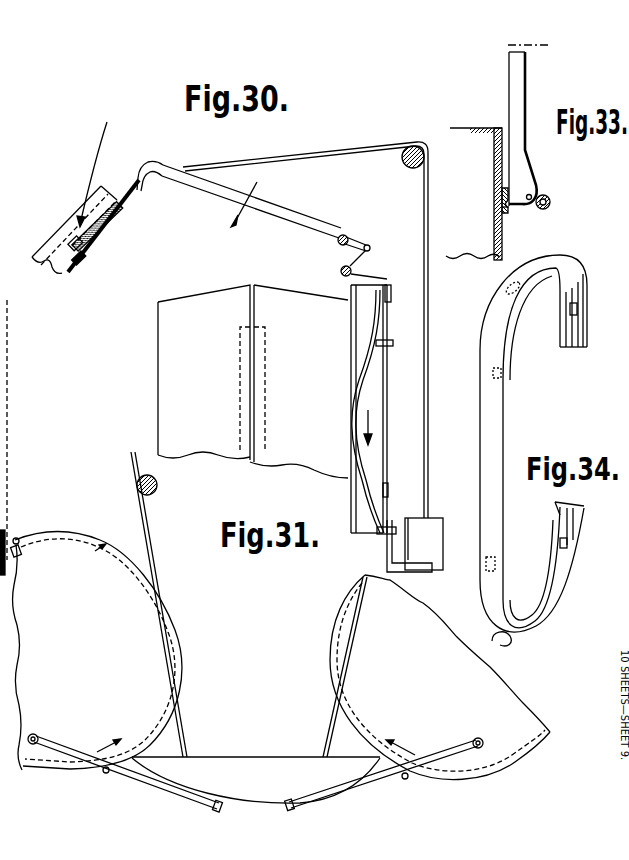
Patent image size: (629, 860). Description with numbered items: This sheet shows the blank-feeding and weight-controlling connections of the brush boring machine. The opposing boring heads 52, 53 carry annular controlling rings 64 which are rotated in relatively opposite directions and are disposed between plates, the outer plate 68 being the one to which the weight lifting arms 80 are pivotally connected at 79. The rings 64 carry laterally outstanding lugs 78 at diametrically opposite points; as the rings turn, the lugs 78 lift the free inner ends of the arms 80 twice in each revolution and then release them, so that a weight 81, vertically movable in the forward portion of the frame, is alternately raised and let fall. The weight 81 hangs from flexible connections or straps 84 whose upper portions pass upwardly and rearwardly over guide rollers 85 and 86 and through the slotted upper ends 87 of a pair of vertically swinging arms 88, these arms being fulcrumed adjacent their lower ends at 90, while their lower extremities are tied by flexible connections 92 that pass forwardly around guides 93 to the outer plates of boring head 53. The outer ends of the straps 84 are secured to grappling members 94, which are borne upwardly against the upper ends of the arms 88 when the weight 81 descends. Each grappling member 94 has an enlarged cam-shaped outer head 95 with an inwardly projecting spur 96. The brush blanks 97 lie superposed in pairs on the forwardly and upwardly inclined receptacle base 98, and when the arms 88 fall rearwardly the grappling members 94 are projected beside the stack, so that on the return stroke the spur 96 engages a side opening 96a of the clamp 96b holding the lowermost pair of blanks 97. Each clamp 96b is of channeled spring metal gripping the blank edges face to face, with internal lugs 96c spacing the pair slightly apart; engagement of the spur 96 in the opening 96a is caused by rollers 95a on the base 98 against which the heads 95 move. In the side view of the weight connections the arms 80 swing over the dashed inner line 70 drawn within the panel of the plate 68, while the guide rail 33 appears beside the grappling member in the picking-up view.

In FIG. 30, the guide rail 33 is at (120, 197).
In FIG. 30, the boring head 52 is at (204, 360).
In FIG. 30, the boring head 53 is at (299, 369).
In FIG. 30, the annular controlling ring 64 is at (372, 411).
In FIG. 30, the outer plate 68 is at (387, 390).
In FIG. 31, the outer plate 68 is at (131, 551).
In FIG. 31, the panel fold line 70 is at (333, 640).
In FIG. 30, the lug 78 is at (391, 342).
In FIG. 31, the lug 78 is at (21, 545).
In FIG. 31, the pivot 79 is at (42, 732).
In FIG. 30, the weight lifting arm 80 is at (387, 550).
In FIG. 31, the weight lifting arm 80 is at (256, 774).
In FIG. 30, the weight 81 is at (425, 539).
In FIG. 31, the weight 81 is at (252, 765).
In FIG. 30, the flexible connection 84 is at (349, 158).
In FIG. 31, the flexible connection 84 is at (140, 538).
In FIG. 31, the guide roller 85 is at (148, 495).
In FIG. 30, the guide roller 86 is at (405, 170).
In FIG. 30, the slotted upper end 87 is at (158, 166).
In FIG. 30, the vertically swinging arm 88 is at (272, 213).
In FIG. 30, the fulcrum 90 is at (345, 236).
In FIG. 30, the flexible connection 92 is at (400, 258).
In FIG. 30, the guide 93 is at (351, 265).
In FIG. 30, the grappling member 94 is at (126, 199).
In FIG. 33, the grappling member 94 is at (515, 101).
In FIG. 30, the cam-shaped outer head 95 is at (92, 240).
In FIG. 33, the cam-shaped outer head 95 is at (530, 196).
In FIG. 33, the roller 95a is at (551, 198).
In FIG. 33, the spur 96 is at (501, 211).
In FIG. 30, the side opening 96a is at (66, 242).
In FIG. 33, the side opening 96a is at (501, 200).
In FIG. 34, the side opening 96a is at (510, 652).
In FIG. 30, the clamp 96b is at (82, 174).
In FIG. 33, the clamp 96b is at (503, 237).
In FIG. 34, the clamp 96b is at (487, 413).
In FIG. 34, the internal lug 96c is at (578, 307).
In FIG. 30, the brush blank 97 is at (267, 383).
In FIG. 30, the receptacle base 98 is at (77, 261).